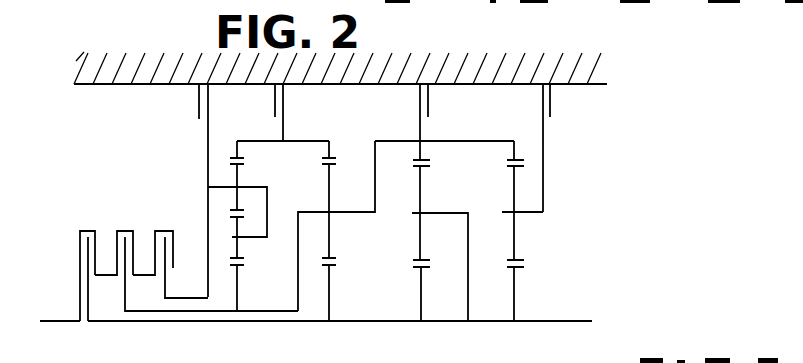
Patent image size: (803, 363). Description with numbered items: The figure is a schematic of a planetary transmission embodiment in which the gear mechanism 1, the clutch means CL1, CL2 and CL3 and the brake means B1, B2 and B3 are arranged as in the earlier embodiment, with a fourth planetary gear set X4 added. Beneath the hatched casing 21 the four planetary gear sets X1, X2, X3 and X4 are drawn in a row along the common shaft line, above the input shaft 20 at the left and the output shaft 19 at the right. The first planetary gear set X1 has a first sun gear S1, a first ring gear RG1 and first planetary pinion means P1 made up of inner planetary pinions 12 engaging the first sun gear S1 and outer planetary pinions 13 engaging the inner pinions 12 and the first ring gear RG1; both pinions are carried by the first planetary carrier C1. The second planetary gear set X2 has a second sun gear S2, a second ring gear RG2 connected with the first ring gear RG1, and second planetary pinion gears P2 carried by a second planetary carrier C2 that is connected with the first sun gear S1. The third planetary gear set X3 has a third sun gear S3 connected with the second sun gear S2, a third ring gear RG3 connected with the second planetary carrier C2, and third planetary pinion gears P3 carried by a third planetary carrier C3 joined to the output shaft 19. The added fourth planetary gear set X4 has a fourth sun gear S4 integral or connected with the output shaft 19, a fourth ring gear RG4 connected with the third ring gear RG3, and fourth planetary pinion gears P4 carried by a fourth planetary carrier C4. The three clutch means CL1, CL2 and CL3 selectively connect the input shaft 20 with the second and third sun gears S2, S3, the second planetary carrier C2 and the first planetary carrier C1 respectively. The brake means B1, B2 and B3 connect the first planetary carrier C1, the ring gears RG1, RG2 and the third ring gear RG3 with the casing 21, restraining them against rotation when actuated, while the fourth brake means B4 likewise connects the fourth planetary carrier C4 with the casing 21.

The casing 21 is at (115, 75).
The input shaft 20 is at (68, 322).
The gear mechanism 1 is at (190, 326).
The output shaft 19 is at (564, 322).
The first clutch means CL1 is at (90, 230).
The second clutch means CL2 is at (126, 233).
The third clutch means CL3 is at (165, 233).
The first brake means B1 is at (197, 104).
The second brake means B2 is at (276, 103).
The third brake means B3 is at (415, 112).
The fourth brake means B4 is at (552, 105).
The first planetary pinion means P1 is at (215, 176).
The second planetary pinion gears P2 is at (331, 232).
The third planetary pinion gears P3 is at (418, 205).
The fourth planetary pinion gears P4 is at (517, 195).
The first ring gear RG1 is at (242, 152).
The second ring gear RG2 is at (342, 131).
The third ring gear RG3 is at (425, 152).
The fourth ring gear RG4 is at (517, 152).
The first planetary carrier C1 is at (260, 235).
The second planetary carrier C2 is at (357, 212).
The third planetary carrier C3 is at (438, 212).
The fourth planetary carrier C4 is at (522, 213).
The inner planetary pinions 12 is at (238, 252).
The outer planetary pinions 13 is at (230, 197).
The first sun gear S1 is at (240, 298).
The second sun gear S2 is at (332, 302).
The third sun gear S3 is at (423, 307).
The fourth sun gear S4 is at (515, 307).
The first planetary gear set X1 is at (227, 290).
The second planetary gear set X2 is at (322, 290).
The third planetary gear set X3 is at (411, 291).
The fourth planetary gear set X4 is at (506, 291).